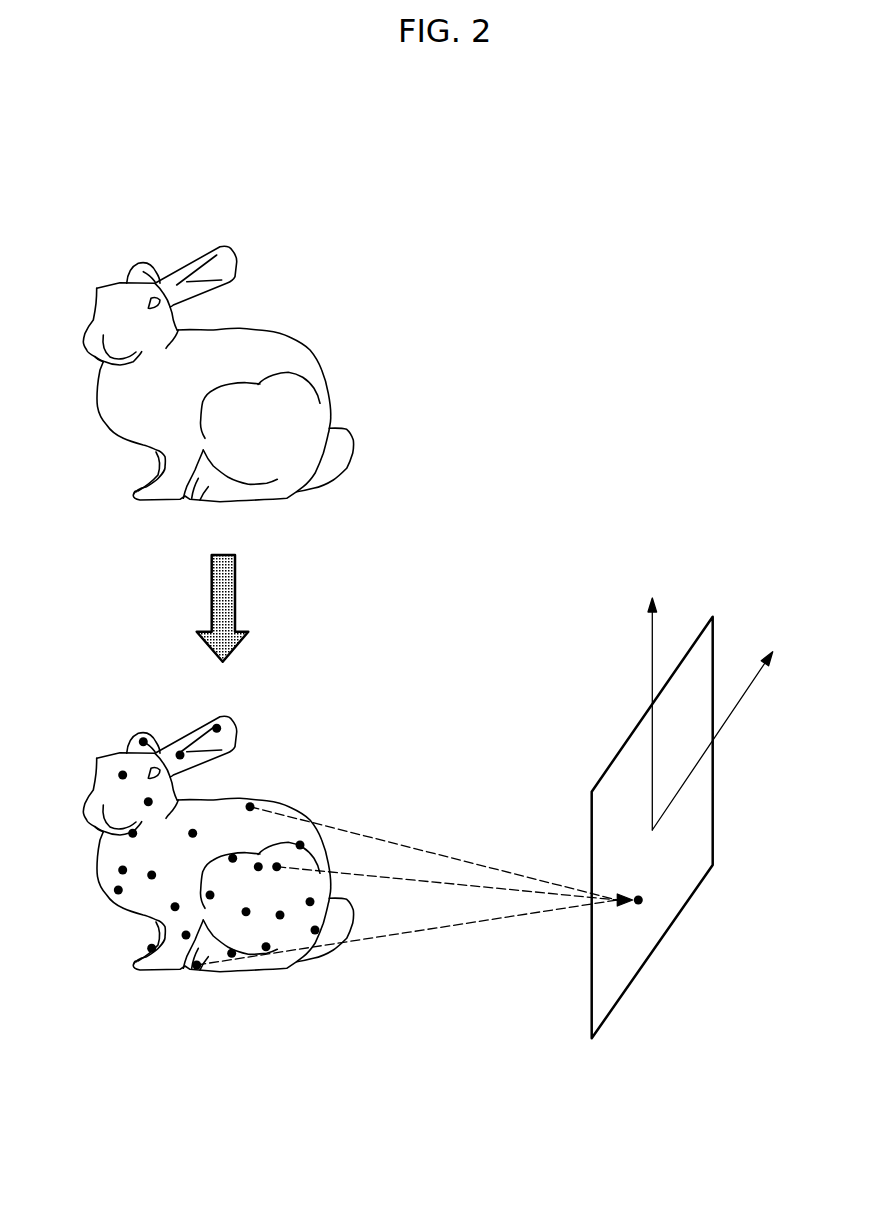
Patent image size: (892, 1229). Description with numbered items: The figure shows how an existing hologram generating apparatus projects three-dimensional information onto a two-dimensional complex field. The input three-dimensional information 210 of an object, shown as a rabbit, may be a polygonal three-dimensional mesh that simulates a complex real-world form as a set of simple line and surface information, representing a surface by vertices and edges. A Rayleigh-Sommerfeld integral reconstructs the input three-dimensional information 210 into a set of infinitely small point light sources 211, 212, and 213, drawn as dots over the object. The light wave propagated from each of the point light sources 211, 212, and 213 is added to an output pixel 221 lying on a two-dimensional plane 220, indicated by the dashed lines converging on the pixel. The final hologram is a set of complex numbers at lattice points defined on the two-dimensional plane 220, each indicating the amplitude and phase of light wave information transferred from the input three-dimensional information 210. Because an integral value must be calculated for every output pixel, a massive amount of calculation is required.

The input 3D information 210 is at (232, 258).
The point light source 211 is at (253, 803).
The point light source 212 is at (281, 865).
The point light source 213 is at (195, 968).
The 2D plane 220 is at (713, 632).
The output pixel 221 is at (643, 903).